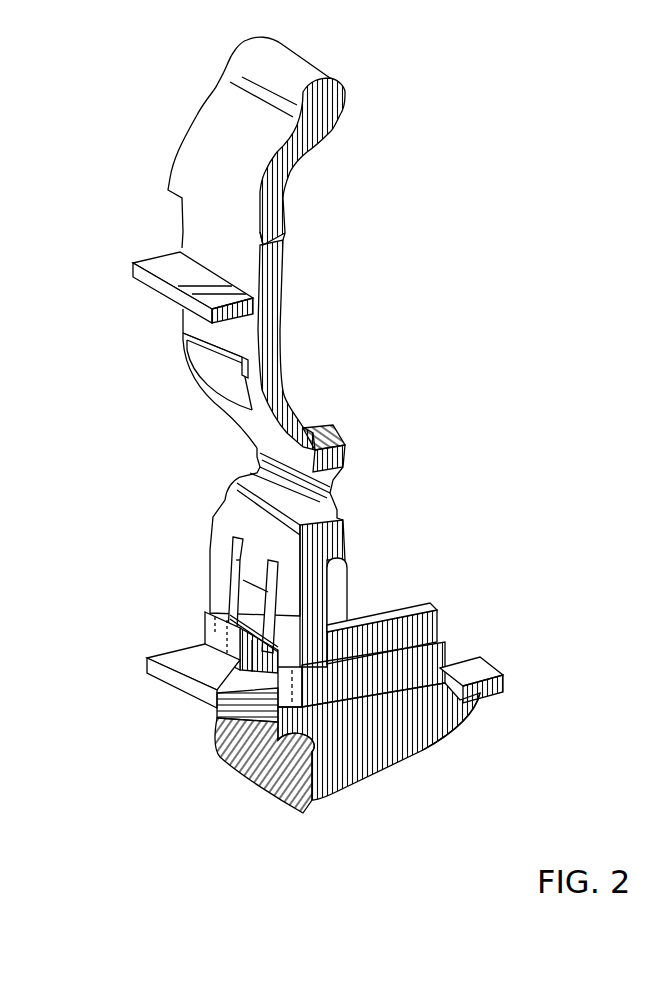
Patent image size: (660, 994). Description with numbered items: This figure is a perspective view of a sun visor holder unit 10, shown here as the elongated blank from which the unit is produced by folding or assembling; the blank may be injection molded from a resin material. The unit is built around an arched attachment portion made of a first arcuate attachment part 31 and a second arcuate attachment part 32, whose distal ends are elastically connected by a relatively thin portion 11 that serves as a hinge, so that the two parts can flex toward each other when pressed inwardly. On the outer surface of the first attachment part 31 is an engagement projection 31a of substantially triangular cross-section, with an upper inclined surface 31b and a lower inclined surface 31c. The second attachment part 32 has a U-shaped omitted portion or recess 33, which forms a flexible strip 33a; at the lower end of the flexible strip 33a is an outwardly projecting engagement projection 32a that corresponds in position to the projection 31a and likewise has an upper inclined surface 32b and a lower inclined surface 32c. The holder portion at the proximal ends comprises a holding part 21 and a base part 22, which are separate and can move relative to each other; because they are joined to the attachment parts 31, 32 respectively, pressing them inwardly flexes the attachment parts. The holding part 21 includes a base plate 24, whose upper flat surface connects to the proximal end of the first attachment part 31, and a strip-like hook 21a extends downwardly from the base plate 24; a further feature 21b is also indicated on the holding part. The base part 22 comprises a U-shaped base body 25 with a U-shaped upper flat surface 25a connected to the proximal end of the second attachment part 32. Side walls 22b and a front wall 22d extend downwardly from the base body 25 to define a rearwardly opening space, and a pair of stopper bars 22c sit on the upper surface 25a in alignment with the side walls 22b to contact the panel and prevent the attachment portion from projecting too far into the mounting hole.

The sun visor holder unit 10 is at (225, 479).
The thin portion (hinge) 11 is at (330, 490).
The holding part 21 is at (190, 235).
The strip-like hook 21a is at (201, 117).
The curled end 21b is at (333, 130).
The base part 22 is at (327, 770).
The side walls 22b is at (420, 747).
The stopper bars 22c is at (417, 675).
The front wall 22d is at (220, 747).
The base plate 24 is at (140, 277).
The base body 25 is at (477, 667).
The upper flat surface 25a is at (192, 668).
The first arcuate attachment part 31 is at (277, 367).
The engagement projection 31a is at (247, 367).
The upper inclined surface 31b is at (203, 355).
The lower inclined surface 31c is at (197, 330).
The second arcuate attachment part 32 is at (238, 503).
The engagement projection 32a is at (233, 613).
The upper inclined surface 32b is at (243, 597).
The lower inclined surface 32c is at (205, 640).
The U-shaped omitted portion (recess) 33 is at (243, 545).
The flexible strip 33a is at (243, 572).